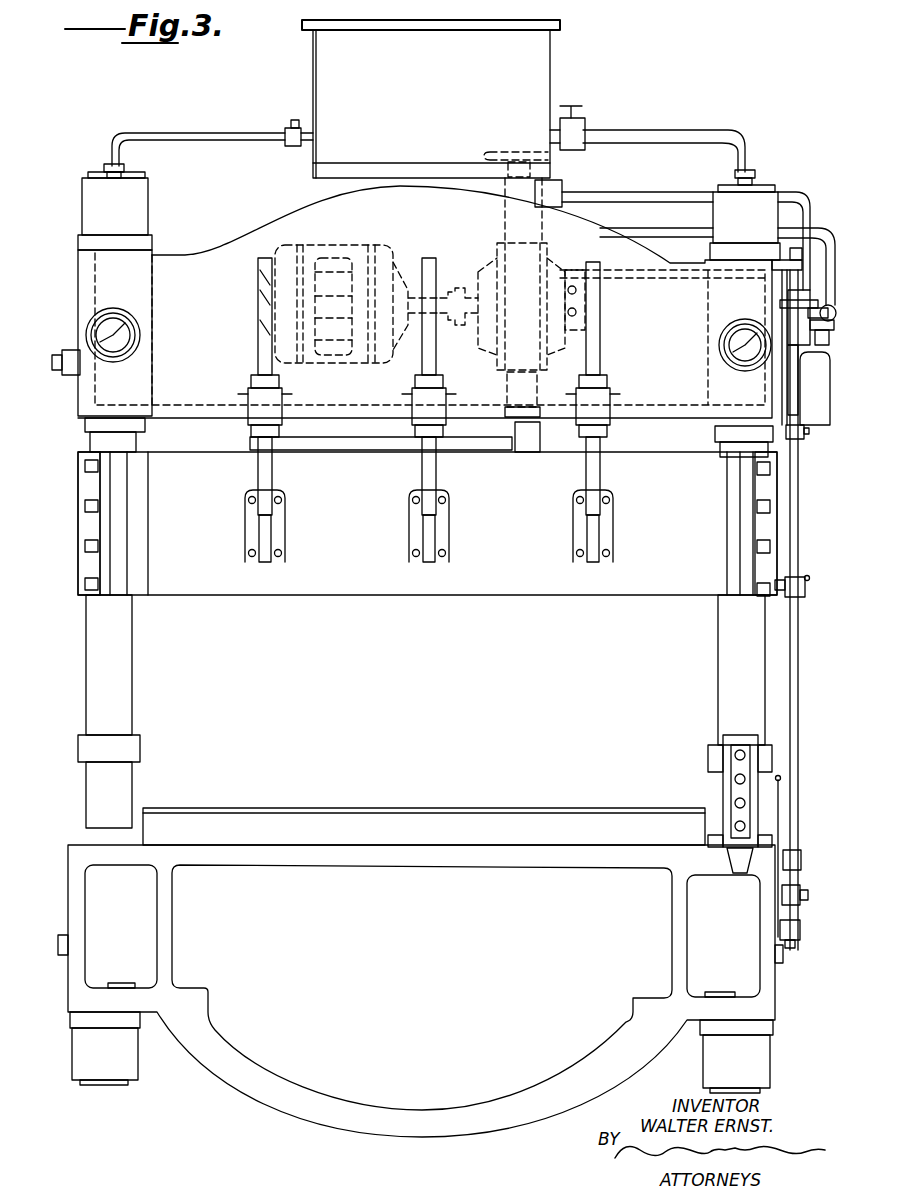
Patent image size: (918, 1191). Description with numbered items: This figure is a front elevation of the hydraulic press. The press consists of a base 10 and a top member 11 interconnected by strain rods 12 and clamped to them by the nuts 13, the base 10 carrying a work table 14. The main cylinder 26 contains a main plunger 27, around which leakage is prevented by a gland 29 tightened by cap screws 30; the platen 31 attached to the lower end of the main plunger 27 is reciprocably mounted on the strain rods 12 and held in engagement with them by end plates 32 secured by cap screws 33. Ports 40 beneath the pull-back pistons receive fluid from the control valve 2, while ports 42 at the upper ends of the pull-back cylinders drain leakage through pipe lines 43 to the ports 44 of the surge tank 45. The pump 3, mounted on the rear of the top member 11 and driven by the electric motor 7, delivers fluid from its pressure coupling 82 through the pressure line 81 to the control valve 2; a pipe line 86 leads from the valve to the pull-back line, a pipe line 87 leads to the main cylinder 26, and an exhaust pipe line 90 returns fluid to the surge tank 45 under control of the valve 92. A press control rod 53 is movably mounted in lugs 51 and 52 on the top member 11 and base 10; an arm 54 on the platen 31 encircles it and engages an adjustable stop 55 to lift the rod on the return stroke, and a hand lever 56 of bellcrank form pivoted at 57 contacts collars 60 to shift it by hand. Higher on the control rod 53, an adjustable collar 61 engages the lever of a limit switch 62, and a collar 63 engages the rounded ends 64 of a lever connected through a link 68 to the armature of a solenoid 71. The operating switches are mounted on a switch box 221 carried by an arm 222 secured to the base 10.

The control valve 2 is at (820, 360).
The pump 3 is at (496, 258).
The electric motor 7 is at (355, 266).
The base 10 is at (158, 860).
The top member 11 is at (198, 405).
The strain rods 12 is at (125, 721).
The nuts 13 is at (135, 203).
The work table 14 is at (290, 818).
The main cylinder 26 is at (325, 190).
The main plunger 27 is at (380, 444).
The gland 29 is at (320, 432).
The cap screws 30 is at (540, 434).
The platen 31 is at (478, 596).
The end plates 32 is at (92, 522).
The cap screws 33 is at (91, 592).
The ports 40 is at (75, 370).
The ports 42 is at (122, 170).
The pipe lines 43 is at (228, 137).
The ports 44 is at (300, 146).
The surge tank 45 is at (313, 100).
The lug 51 is at (790, 262).
The lug 52 is at (800, 858).
The press control rod 53 is at (800, 666).
The arm 54 is at (806, 590).
The adjustable stop 55 is at (808, 577).
The hand lever 56 is at (782, 812).
The pivot 57 is at (785, 897).
The collars 60 is at (810, 890).
The adjustable collar 61 is at (800, 441).
The limit switch 62 is at (785, 412).
The collar 63 is at (790, 309).
The rounded ends 64 is at (788, 300).
The link 68 is at (785, 350).
The solenoid 71 is at (809, 430).
The pressure line 81 is at (640, 275).
The pressure coupling 82 is at (586, 318).
The pipe line 86 is at (820, 240).
The pipe line 87 is at (616, 186).
The pipe line 90 is at (632, 133).
The valve 92 is at (572, 126).
The switch box 221 is at (725, 782).
The arm 222 is at (740, 868).